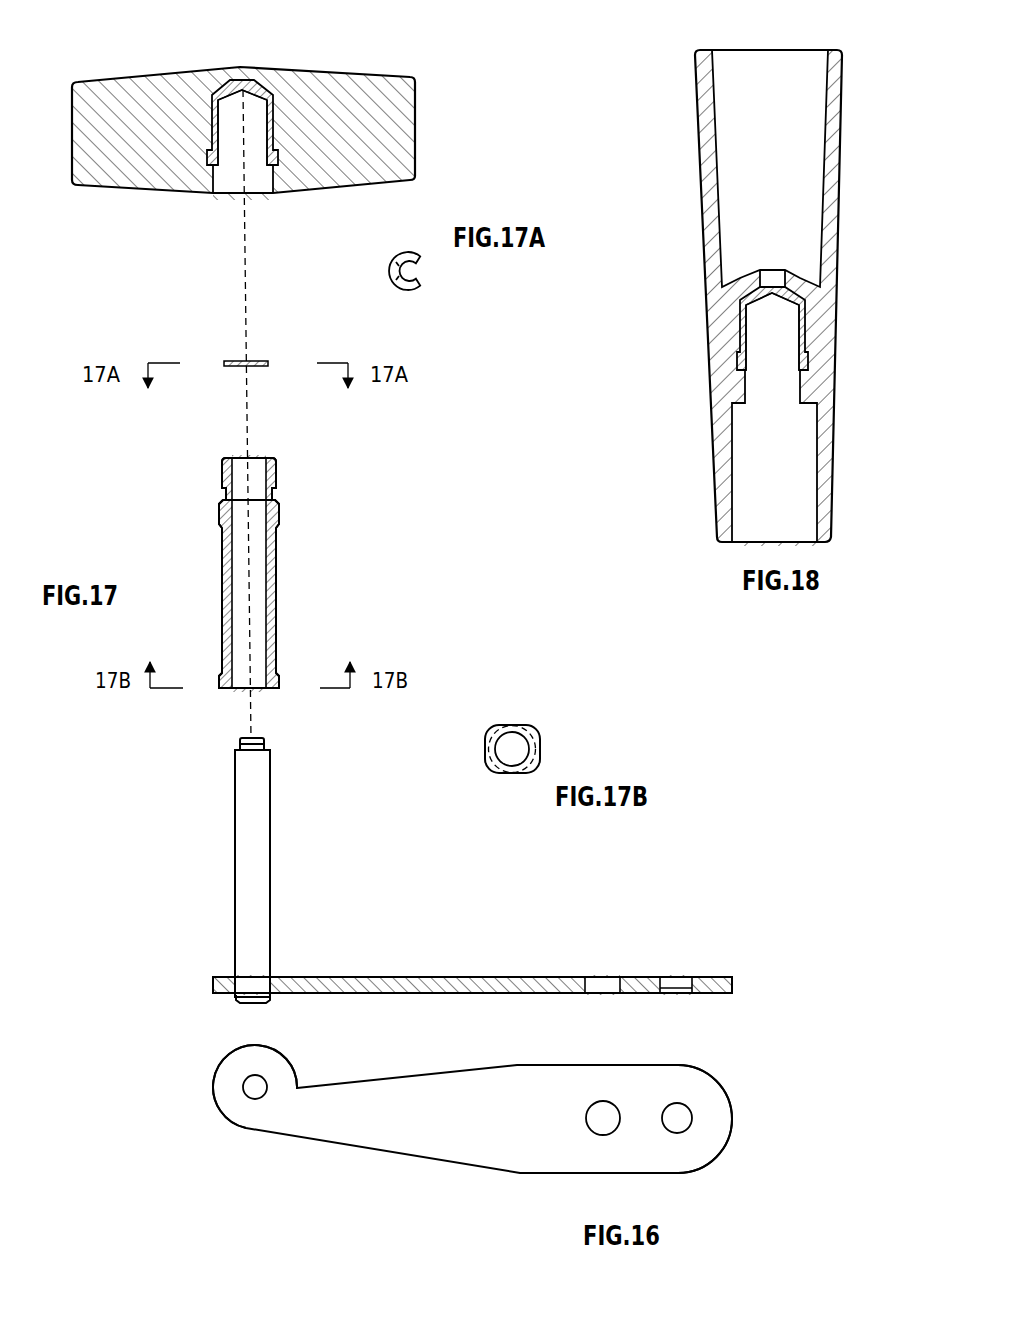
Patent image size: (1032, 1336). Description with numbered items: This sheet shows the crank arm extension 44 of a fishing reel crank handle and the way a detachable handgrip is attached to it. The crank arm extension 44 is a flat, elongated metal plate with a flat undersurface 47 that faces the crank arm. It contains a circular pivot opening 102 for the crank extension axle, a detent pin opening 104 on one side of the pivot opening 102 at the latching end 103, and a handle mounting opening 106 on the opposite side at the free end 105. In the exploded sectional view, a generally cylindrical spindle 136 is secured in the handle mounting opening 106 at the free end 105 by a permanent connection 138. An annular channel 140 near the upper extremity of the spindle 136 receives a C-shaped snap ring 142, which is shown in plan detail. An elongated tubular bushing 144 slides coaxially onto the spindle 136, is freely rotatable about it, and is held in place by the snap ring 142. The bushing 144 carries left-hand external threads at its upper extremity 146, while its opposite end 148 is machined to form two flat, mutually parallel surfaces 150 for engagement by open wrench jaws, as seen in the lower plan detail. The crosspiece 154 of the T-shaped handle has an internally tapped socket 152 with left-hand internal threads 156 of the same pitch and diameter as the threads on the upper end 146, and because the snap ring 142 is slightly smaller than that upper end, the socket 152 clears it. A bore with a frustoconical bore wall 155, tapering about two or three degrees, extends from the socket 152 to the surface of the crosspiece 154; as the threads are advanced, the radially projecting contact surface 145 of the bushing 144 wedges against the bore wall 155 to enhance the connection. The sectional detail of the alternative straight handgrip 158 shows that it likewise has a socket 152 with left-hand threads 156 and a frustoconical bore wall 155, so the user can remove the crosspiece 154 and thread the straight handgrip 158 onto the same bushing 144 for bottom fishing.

In FIG. 16, the crank arm extension 44 is at (475, 1122).
In FIG. 17, the undersurface 47 is at (488, 967).
In FIG. 17, the pivot opening 102 is at (614, 976).
In FIG. 16, the pivot opening 102 is at (607, 1110).
In FIG. 17, the latching end 103 is at (731, 981).
In FIG. 16, the latching end 103 is at (697, 1158).
In FIG. 17, the detent pin opening 104 is at (690, 976).
In FIG. 16, the detent pin opening 104 is at (688, 1110).
In FIG. 17, the free end 105 is at (222, 984).
In FIG. 16, the free end 105 is at (250, 1114).
In FIG. 16, the handle mounting opening 106 is at (248, 1084).
In FIG. 17, the spindle 136 is at (250, 879).
In FIG. 17, the permanent connection 138 is at (264, 1012).
In FIG. 17, the annular channel 140 is at (268, 744).
In FIG. 17, the C-shaped snap ring 142 is at (420, 290).
In FIG. 17, the tubular bushing 144 is at (292, 562).
In FIG. 17, the contact surface 145 is at (278, 512).
In FIG. 17, the upper extremity of bushing 146 is at (277, 472).
In FIG. 17, the opposite end of bushing 148 is at (280, 680).
In FIG. 17B, the opposite end of bushing 148 is at (541, 750).
In FIG. 17B, the flat surfaces 150 is at (515, 724).
In FIG. 17A, the socket 152 is at (210, 120).
In FIG. 18, the socket 152 is at (808, 335).
In FIG. 17A, the crosspiece 154 is at (450, 122).
In FIG. 17A, the frustoconical bore wall 155 is at (230, 180).
In FIG. 18, the frustoconical bore wall 155 is at (765, 395).
In FIG. 17A, the internal threads 156 is at (257, 118).
In FIG. 18, the internal threads 156 is at (756, 332).
In FIG. 18, the straight handgrip 158 is at (850, 252).